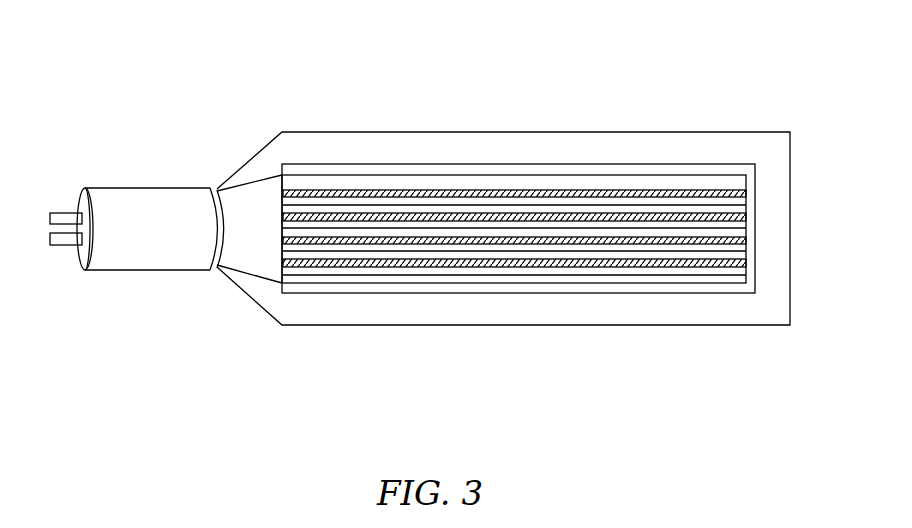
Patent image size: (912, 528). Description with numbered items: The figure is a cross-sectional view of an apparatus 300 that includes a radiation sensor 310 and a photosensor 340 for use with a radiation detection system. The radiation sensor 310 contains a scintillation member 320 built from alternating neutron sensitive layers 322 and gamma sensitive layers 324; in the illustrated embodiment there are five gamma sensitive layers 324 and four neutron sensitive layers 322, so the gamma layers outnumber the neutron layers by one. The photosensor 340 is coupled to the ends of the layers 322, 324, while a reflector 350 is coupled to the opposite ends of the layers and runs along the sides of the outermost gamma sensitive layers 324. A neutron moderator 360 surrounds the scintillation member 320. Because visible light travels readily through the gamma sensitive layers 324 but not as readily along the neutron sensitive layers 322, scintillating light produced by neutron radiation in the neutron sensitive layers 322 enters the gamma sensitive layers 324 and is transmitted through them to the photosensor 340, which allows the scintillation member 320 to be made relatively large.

The apparatus 300 is at (163, 49).
The radiation sensor 310 is at (557, 126).
The scintillation member 320 is at (509, 298).
The neutron sensitive layers 322 is at (620, 198).
The gamma sensitive layers 324 is at (348, 183).
The photosensor 340 is at (125, 187).
The reflector 350 is at (695, 158).
The neutron moderator 360 is at (373, 145).